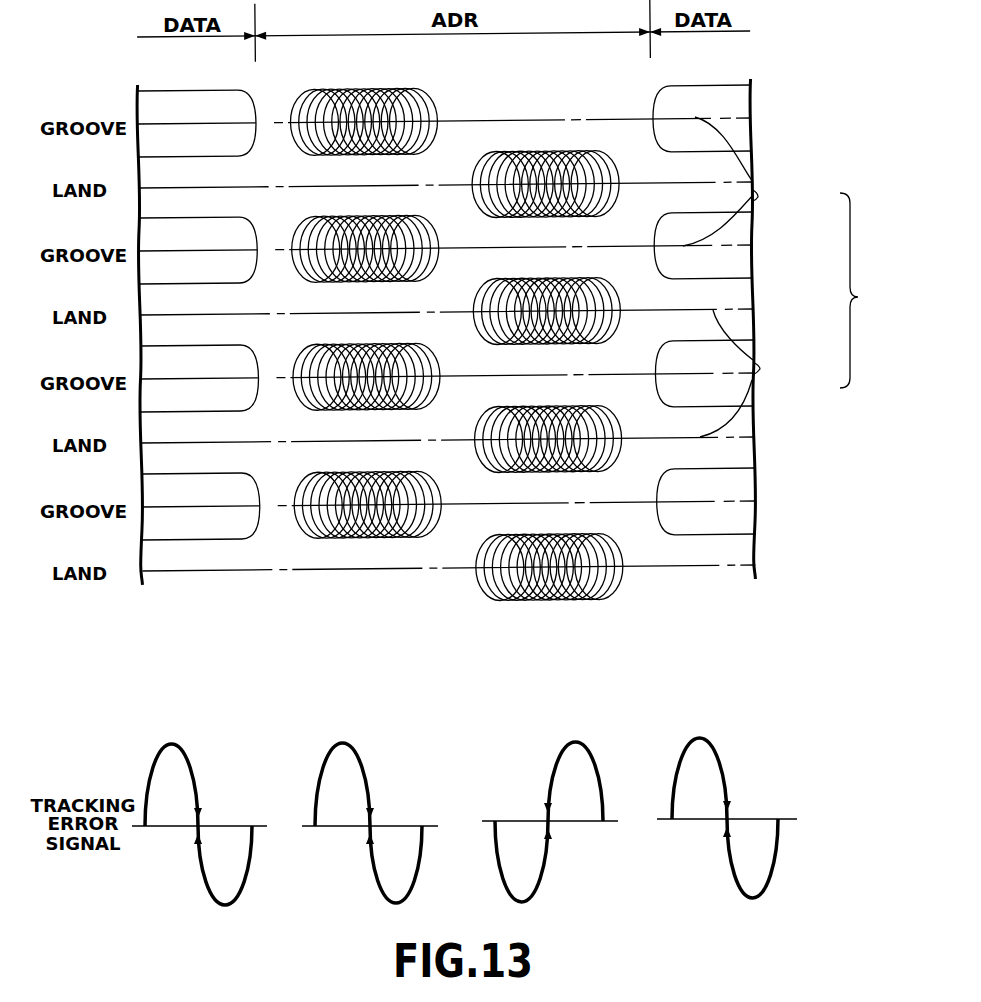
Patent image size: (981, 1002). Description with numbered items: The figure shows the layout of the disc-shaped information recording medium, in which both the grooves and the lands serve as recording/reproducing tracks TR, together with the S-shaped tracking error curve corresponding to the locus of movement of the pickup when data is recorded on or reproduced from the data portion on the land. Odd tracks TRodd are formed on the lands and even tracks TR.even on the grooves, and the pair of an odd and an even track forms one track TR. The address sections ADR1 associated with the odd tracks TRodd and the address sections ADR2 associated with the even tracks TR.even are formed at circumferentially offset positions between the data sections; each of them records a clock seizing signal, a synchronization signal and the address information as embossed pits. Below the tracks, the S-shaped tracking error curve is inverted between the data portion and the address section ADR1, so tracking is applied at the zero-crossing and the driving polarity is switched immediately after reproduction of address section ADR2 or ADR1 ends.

The address section associated with the even tracks ADR2 is at (293, 637).
The address section associated with the odd tracks ADR1 is at (475, 637).
The odd track TRodd is at (756, 181).
The even track TR.even is at (772, 373).
The recording/reproducing track TR is at (864, 290).